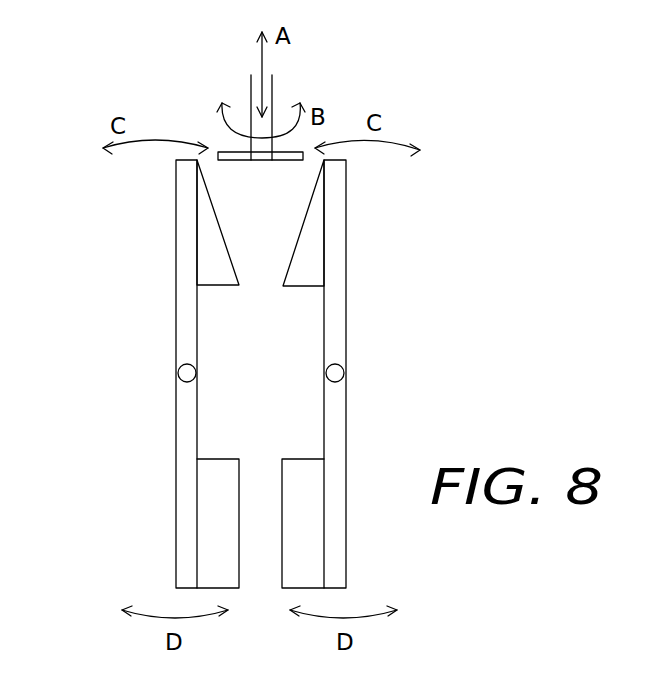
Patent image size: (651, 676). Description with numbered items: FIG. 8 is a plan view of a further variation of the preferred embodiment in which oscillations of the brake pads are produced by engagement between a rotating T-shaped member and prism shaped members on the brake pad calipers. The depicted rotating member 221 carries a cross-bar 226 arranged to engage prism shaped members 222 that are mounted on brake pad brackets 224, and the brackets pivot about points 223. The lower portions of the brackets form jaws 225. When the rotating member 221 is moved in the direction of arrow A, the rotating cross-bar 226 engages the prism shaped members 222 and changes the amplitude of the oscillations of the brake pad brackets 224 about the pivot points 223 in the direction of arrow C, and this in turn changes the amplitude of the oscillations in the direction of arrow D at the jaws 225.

The rotating member 221 is at (250, 103).
The prism shaped members 222 is at (212, 253).
The pivot points 223 is at (381, 374).
The brake pad brackets 224 is at (183, 343).
The gripping jaw 225 is at (298, 485).
The cross-bar 226 is at (240, 160).